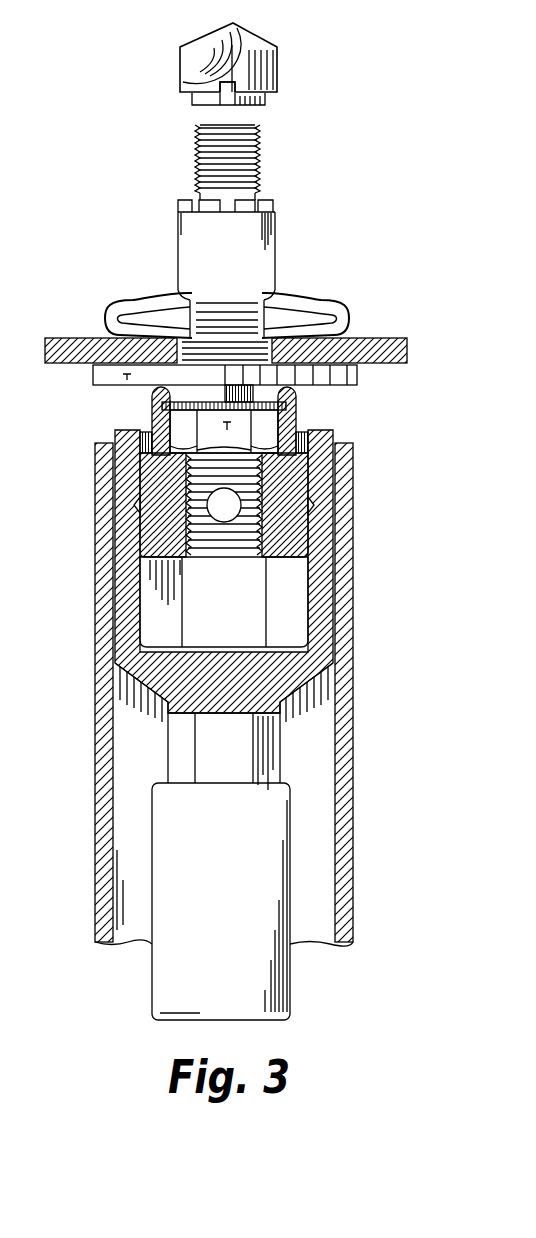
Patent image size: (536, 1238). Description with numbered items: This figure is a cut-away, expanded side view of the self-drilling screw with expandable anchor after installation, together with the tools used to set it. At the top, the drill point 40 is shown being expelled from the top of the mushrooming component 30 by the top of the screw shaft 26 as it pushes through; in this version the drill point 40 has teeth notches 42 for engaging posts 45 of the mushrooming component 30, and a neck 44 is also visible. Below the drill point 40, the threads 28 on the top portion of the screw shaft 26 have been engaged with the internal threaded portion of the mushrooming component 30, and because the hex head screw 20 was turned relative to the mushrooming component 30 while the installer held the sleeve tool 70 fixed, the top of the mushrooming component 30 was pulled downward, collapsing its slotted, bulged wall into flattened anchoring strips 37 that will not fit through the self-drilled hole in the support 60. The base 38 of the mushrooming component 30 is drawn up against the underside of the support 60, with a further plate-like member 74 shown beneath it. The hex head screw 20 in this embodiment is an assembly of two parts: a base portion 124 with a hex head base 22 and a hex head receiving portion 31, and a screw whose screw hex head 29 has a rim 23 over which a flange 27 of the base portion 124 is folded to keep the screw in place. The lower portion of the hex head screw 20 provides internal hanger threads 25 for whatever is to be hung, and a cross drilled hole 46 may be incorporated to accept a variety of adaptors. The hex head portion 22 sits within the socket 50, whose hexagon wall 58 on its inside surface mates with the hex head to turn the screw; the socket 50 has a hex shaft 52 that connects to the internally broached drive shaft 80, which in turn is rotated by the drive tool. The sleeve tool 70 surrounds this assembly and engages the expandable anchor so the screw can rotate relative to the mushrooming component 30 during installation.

The hex head screw 20 is at (56, 972).
The hex head portion 22 is at (258, 610).
The rim 23 is at (293, 416).
The internal hanger threads 25 is at (227, 519).
The screw shaft 26 is at (263, 162).
The flange 27 is at (157, 404).
The threads 28 is at (252, 170).
The screw hex head 29 is at (214, 445).
The mushrooming component 30 is at (63, 91).
The hex head receiving portion 31 is at (170, 450).
The anchoring strips 37 is at (130, 300).
The base 38 is at (170, 422).
The drill point 40 is at (232, 88).
The teeth notches 42 is at (230, 93).
The neck 44 is at (192, 100).
The posts 45 is at (188, 200).
The cross drilled hole 46 is at (261, 536).
The socket 50 is at (293, 690).
The hex shaft 52 is at (237, 761).
The hexagon wall 58 is at (276, 602).
The support 60 is at (92, 339).
The sleeve tool 70 is at (95, 686).
The backing plate 74 is at (93, 376).
The internally broached drive shaft 80 is at (237, 851).
The base portion 124 is at (280, 558).